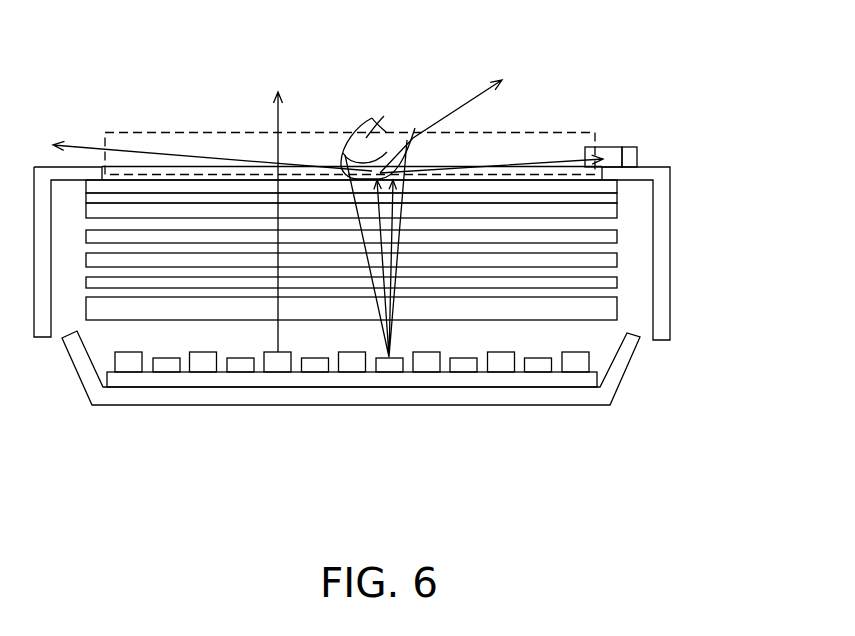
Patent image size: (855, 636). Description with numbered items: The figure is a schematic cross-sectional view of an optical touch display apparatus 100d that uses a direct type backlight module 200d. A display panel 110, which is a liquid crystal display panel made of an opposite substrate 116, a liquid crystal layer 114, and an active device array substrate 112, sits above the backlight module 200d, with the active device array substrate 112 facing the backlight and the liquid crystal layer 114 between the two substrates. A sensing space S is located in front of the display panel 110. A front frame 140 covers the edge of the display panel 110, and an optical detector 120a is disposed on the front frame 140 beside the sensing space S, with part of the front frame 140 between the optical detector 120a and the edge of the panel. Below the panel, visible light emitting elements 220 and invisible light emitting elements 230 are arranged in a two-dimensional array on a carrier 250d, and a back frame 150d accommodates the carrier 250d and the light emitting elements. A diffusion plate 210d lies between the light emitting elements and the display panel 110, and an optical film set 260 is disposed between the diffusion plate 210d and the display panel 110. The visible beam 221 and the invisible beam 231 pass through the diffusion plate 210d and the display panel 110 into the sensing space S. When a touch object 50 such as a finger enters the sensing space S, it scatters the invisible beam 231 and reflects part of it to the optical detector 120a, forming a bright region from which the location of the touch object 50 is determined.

The optical touch display apparatus 100d is at (713, 507).
The front frame 140 is at (42, 340).
The optical detector 120a is at (609, 146).
The sensing space S is at (182, 132).
The display panel 110 is at (435, 225).
The opposite substrate 116 is at (615, 185).
The liquid crystal layer 114 is at (615, 200).
The active device array substrate 112 is at (615, 213).
The backlight module 200d is at (426, 299).
The optical film set 260 is at (625, 230).
The diffusion plate 210d is at (610, 307).
The back frame 150d is at (455, 397).
The carrier 250d is at (182, 379).
The visible light emitting element 220 is at (573, 360).
The invisible light emitting element 230 is at (535, 367).
The visible beam 221 is at (276, 122).
The touch object 50 is at (372, 118).
The invisible beam 231 is at (458, 110).